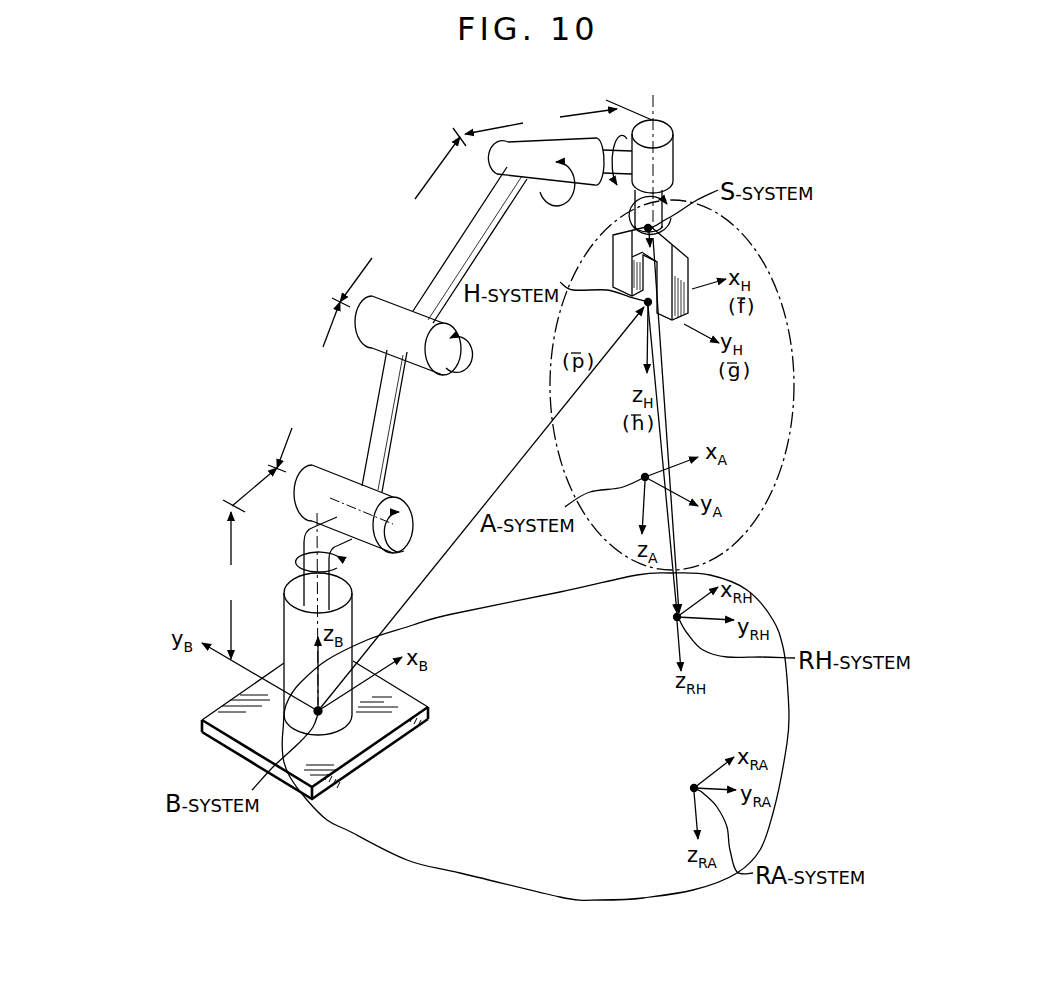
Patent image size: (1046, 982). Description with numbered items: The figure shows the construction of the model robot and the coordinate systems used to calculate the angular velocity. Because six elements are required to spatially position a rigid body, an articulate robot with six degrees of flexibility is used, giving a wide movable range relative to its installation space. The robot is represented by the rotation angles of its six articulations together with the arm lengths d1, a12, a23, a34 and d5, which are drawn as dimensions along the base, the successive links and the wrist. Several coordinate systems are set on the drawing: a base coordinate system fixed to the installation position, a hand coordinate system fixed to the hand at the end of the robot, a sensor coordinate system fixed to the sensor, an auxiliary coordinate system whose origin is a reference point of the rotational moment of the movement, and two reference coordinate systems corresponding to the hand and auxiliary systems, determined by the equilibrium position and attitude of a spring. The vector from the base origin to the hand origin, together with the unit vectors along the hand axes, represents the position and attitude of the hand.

The arm length d1 is at (233, 585).
The arm length d5 is at (558, 119).
The arm length a12 is at (250, 490).
The arm length a23 is at (304, 387).
The arm length a34 is at (399, 217).